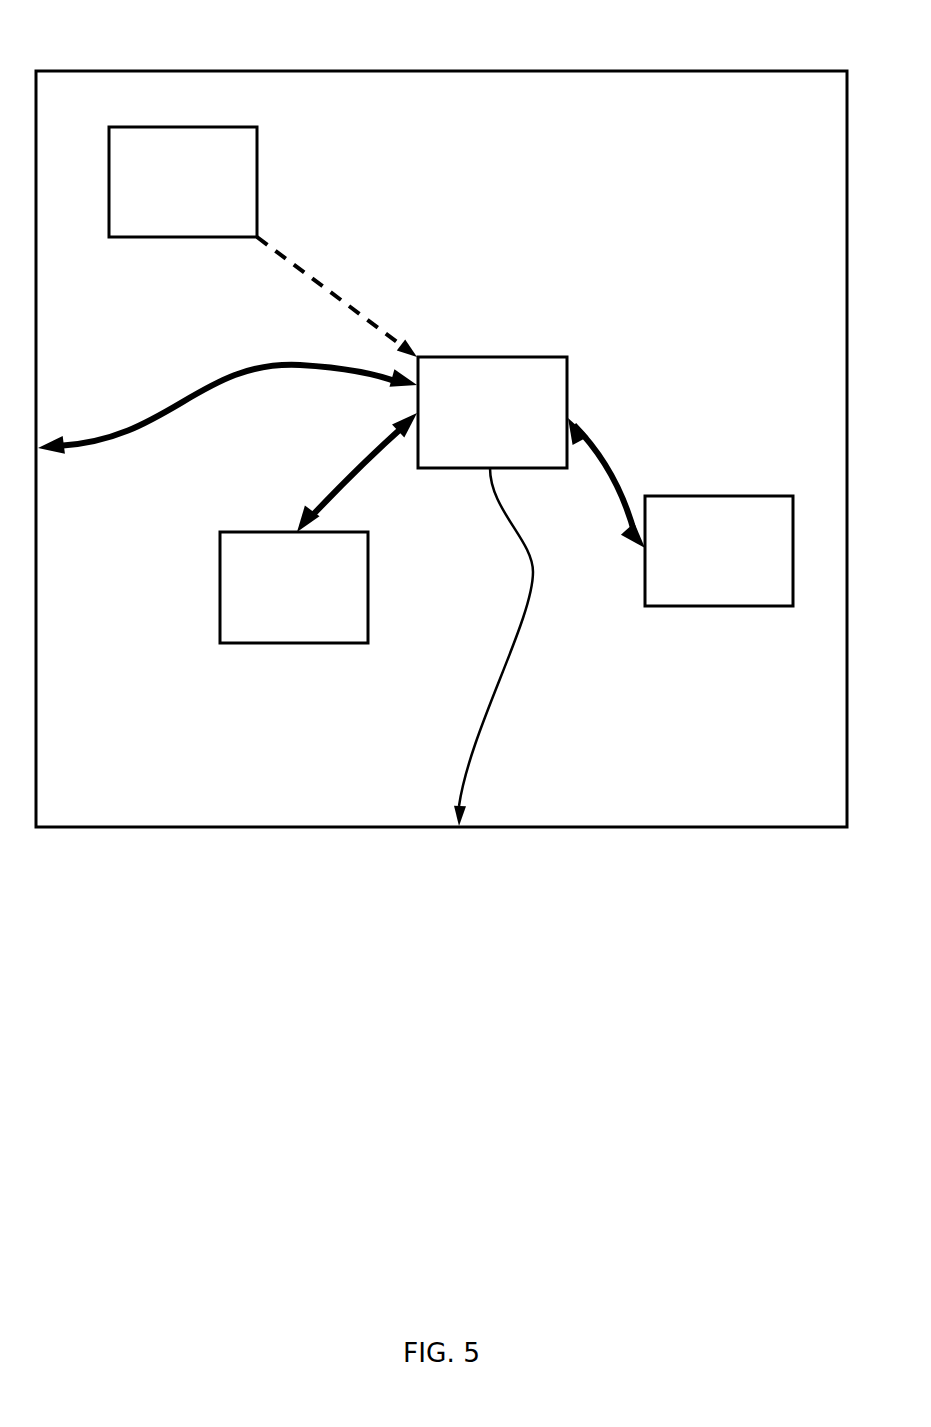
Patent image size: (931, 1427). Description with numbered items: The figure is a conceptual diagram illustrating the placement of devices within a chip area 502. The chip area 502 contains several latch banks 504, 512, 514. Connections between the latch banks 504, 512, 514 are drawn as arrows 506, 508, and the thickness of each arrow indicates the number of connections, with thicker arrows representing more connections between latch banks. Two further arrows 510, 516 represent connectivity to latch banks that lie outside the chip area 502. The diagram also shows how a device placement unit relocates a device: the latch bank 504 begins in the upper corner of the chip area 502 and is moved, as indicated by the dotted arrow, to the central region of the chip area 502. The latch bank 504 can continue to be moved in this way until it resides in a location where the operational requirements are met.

The chip area 502 is at (133, 71).
The latch bank 504 is at (258, 152).
The arrow 506 is at (608, 452).
The arrow 508 is at (377, 463).
The arrow 510 is at (200, 396).
The latch bank 512 is at (218, 611).
The latch bank 514 is at (670, 608).
The arrow 516 is at (460, 754).